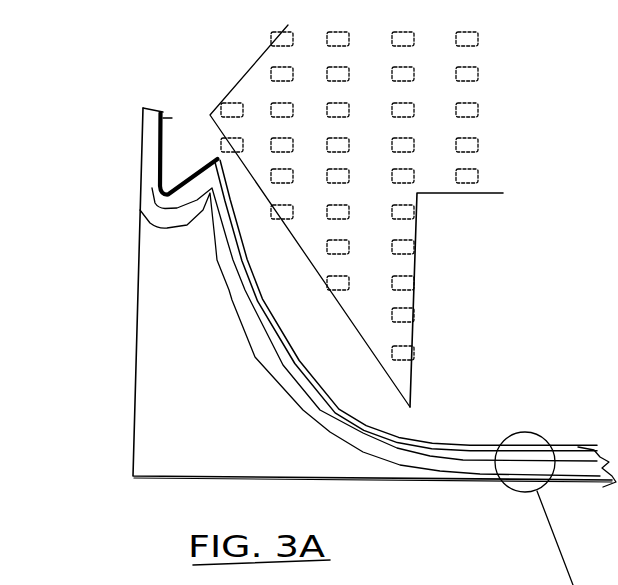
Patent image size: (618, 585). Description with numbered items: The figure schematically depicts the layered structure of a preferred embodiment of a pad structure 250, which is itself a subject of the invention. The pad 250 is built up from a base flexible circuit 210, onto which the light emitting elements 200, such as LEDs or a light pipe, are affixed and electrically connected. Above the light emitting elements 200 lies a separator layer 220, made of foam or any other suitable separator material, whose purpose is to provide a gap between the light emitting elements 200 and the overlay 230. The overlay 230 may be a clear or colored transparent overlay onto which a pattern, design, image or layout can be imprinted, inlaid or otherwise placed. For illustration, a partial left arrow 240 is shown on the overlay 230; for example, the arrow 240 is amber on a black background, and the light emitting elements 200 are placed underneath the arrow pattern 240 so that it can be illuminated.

The light emitting elements 200 is at (488, 77).
The base flexible circuit 210 is at (137, 277).
The separator layer 220 is at (255, 357).
The overlay 230 is at (217, 157).
The partial left arrow 240 is at (262, 88).
The pad structure 250 is at (462, 343).